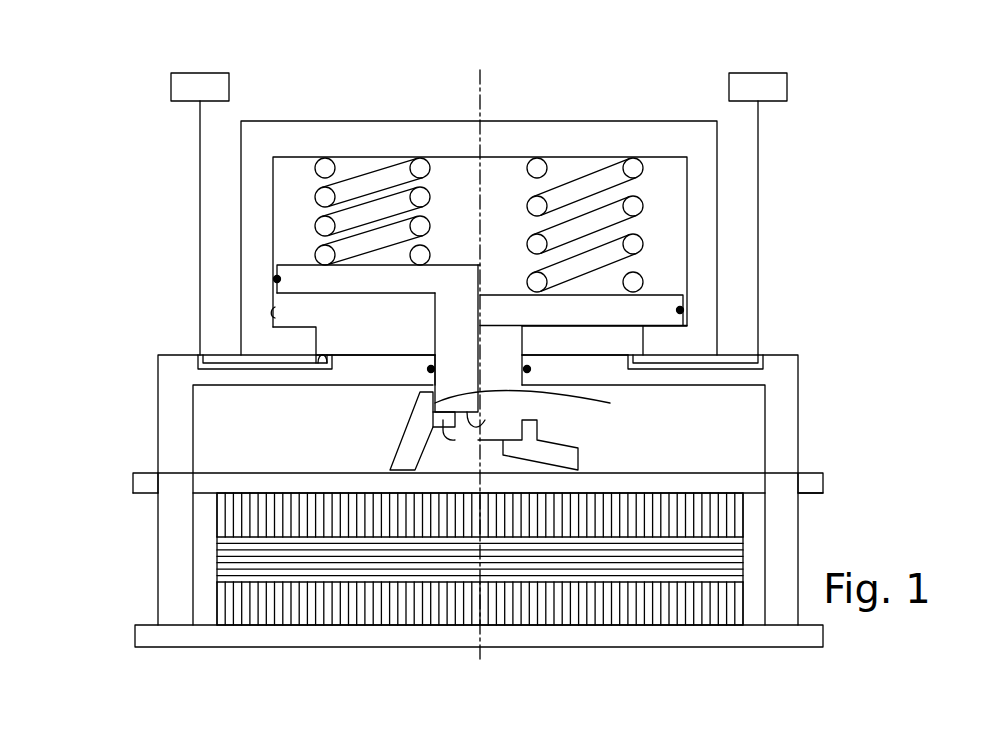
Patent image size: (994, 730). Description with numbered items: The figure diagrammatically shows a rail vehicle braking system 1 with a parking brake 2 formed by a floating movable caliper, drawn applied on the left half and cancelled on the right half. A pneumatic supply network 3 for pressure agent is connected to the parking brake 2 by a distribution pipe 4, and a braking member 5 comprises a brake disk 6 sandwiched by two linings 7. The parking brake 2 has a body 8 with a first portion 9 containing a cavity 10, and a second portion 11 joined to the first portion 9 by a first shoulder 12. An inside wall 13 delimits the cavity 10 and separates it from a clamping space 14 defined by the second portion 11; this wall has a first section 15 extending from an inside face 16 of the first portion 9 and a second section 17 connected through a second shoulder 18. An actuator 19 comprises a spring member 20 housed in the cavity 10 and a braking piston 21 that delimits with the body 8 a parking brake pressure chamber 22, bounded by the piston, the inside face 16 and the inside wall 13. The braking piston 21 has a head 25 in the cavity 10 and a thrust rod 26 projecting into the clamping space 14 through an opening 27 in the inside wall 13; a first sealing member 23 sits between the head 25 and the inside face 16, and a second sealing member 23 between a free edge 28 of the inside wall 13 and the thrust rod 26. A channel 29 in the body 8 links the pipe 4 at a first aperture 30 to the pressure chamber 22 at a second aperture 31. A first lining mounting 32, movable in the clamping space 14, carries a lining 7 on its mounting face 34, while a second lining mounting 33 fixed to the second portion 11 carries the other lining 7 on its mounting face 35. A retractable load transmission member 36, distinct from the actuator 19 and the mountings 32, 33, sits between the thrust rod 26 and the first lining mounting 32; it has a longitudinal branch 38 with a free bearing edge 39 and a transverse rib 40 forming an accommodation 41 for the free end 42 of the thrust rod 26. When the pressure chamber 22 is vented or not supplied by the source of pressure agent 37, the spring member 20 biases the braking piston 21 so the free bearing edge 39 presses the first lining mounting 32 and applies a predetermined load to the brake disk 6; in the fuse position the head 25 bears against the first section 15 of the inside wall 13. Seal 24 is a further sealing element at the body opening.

The rail vehicle braking system 1 is at (108, 145).
The parking brake 2 is at (154, 305).
The supply network 3 is at (128, 52).
The distribution pipe 4 is at (200, 150).
The braking member 5 is at (204, 572).
The brake disk 6 is at (220, 553).
The linings 7 is at (225, 516).
The body 8 is at (330, 121).
The first portion 9 is at (282, 138).
The cavity 10 is at (282, 200).
The second portion 11 is at (168, 426).
The first shoulder 12 is at (216, 355).
The inside wall 13 is at (345, 377).
The clamping space 14 is at (278, 442).
The first section 15 is at (297, 340).
The inside face 16 is at (270, 302).
The second section 17 is at (360, 363).
The second shoulder 18 is at (323, 338).
The actuator 19 is at (448, 240).
The spring member 20 is at (370, 183).
The braking piston 21 is at (463, 282).
The parking brake pressure chamber 22 is at (424, 324).
The sealing member 23 is at (274, 279).
The seal 24 is at (428, 372).
The head 25 is at (381, 295).
The thrust rod 26 is at (474, 346).
The opening 27 is at (434, 355).
The free edge 28 is at (435, 384).
The channel 29 is at (253, 369).
The first aperture 30 is at (198, 355).
The second aperture 31 is at (313, 364).
The first lining mounting 32 is at (242, 485).
The second lining mounting 33 is at (322, 638).
The mounting face 34 is at (312, 500).
The mounting face 35 is at (437, 623).
The retractable load transmission member 36 is at (578, 468).
The source of pressure agent 37 is at (200, 73).
The longitudinal branch 38 is at (406, 428).
The free bearing edge 39 is at (397, 480).
The transverse rib 40 is at (450, 442).
The accommodation 41 is at (612, 404).
The free end 42 is at (482, 419).